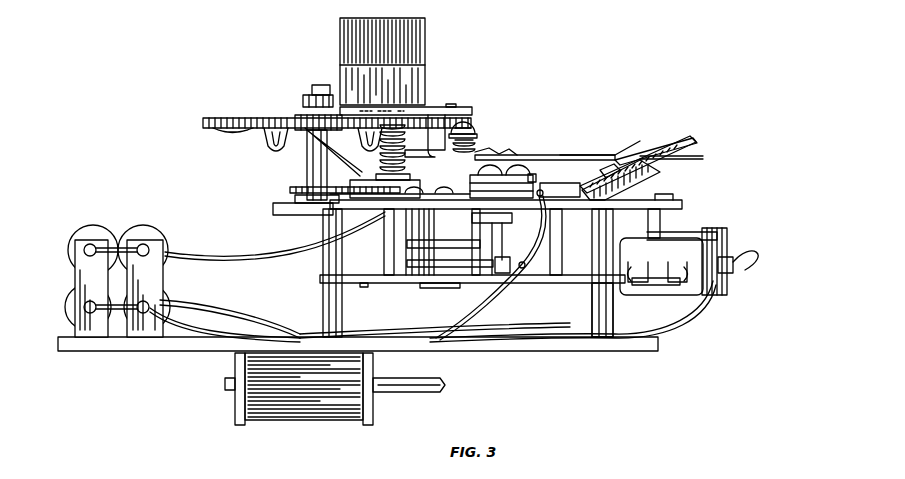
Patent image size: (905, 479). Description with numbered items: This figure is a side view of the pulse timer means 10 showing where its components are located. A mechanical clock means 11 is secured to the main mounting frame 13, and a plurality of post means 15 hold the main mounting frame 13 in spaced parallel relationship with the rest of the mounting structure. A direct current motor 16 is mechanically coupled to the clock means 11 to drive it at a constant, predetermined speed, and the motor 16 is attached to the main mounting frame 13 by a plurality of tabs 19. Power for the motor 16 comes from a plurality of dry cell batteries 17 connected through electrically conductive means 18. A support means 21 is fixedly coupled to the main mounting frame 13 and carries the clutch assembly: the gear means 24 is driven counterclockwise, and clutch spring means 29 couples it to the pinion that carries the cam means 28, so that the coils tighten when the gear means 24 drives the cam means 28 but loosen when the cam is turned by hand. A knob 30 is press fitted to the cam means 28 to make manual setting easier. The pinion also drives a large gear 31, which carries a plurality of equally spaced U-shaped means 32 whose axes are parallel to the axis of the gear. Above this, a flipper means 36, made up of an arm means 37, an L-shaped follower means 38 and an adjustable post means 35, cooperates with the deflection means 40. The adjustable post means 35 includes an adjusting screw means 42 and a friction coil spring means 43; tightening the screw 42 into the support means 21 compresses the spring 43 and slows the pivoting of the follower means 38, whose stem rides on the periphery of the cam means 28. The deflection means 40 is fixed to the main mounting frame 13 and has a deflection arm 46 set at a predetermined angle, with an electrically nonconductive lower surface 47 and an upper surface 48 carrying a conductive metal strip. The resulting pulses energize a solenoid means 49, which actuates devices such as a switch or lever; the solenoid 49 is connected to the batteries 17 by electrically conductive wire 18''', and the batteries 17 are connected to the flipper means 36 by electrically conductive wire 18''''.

The pulse timer means 10 is at (708, 112).
The mechanical clock means 11 is at (514, 274).
The main mounting frame 13 is at (686, 202).
The post means 15 is at (604, 340).
The direct current motor 16 is at (696, 240).
The dry cell batteries 17 is at (76, 240).
The electrically conductive means 18 is at (748, 254).
The electrically conductive wire 18''' is at (225, 312).
The electrically conductive wire 18'''' is at (275, 236).
The tabs 19 is at (661, 225).
The support means 21 is at (280, 208).
The gear means 24 is at (298, 187).
The cam means 28 is at (450, 106).
The clutch spring means 29 is at (398, 156).
The knob 30 is at (415, 30).
The large gear 31 is at (204, 118).
The U-shaped means 32 is at (264, 138).
The adjustable post means 35 is at (468, 147).
The flipper means 36 is at (518, 148).
The arm means 37 is at (571, 158).
The L-shaped follower means 38 is at (525, 160).
The deflection means 40 is at (649, 143).
The adjusting screw means 42 is at (476, 126).
The friction coil spring means 43 is at (443, 138).
The deflection arm 46 is at (663, 160).
The lower surface 47 is at (648, 176).
The upper surface 48 is at (670, 145).
The solenoid means 49 is at (248, 372).